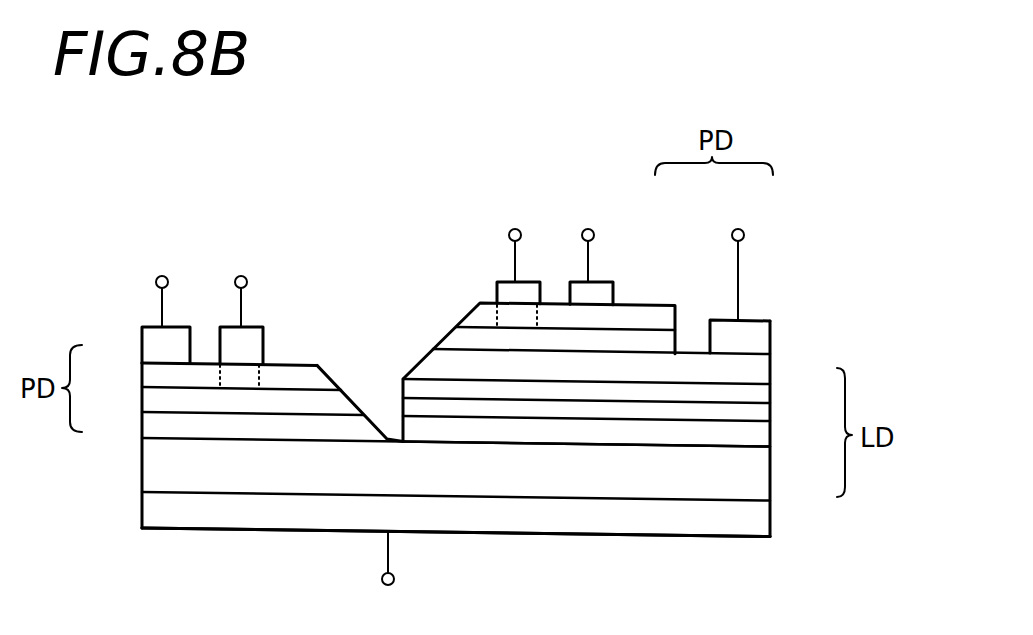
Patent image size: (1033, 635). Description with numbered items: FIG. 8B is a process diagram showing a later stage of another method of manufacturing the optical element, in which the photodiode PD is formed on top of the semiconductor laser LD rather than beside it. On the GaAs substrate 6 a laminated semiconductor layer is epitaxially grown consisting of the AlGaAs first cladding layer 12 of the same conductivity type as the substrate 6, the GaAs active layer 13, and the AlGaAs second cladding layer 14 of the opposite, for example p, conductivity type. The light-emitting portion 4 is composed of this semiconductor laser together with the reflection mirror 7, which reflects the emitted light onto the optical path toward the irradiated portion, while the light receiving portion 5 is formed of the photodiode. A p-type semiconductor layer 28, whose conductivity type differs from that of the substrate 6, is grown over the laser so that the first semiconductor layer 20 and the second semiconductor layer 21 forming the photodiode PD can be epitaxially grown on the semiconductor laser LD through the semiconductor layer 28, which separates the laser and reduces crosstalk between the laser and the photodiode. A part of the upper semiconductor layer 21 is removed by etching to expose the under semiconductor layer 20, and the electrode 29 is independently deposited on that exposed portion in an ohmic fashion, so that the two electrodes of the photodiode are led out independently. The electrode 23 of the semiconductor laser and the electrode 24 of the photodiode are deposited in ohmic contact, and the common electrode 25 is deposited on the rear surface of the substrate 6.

The light-emitting portion 4 is at (578, 200).
The light receiving portion 5 is at (212, 237).
The substrate 6 is at (743, 482).
The reflection mirror 7 is at (353, 398).
The first cladding layer 12 is at (750, 435).
The active layer 13 is at (755, 410).
The second cladding layer 14 is at (753, 393).
The first semiconductor layer 20 is at (157, 398).
The second semiconductor layer 21 is at (157, 373).
The electrode 23 is at (758, 337).
The electrode 24 is at (157, 340).
The common electrode 25 is at (575, 517).
The semiconductor layer 28 is at (210, 425).
The electrode 29 is at (248, 345).